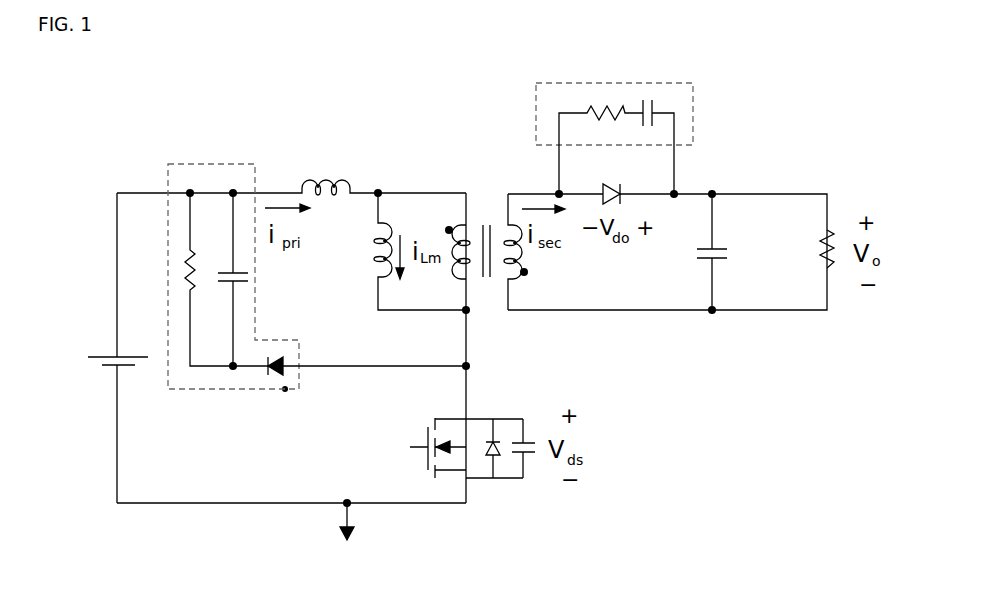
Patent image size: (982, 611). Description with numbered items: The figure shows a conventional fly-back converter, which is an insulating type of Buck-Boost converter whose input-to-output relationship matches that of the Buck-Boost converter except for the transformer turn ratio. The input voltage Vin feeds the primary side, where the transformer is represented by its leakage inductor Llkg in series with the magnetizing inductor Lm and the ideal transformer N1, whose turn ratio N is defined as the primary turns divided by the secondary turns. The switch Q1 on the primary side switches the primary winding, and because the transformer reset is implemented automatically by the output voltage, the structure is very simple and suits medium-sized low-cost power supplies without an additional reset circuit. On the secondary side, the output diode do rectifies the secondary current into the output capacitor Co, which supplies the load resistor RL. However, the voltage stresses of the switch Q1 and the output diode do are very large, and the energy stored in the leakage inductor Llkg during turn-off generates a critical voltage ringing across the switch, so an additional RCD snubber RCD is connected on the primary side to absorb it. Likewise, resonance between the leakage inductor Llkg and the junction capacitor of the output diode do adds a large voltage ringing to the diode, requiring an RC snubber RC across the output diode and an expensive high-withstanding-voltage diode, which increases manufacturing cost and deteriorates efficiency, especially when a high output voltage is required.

The input voltage Vin is at (95, 361).
The RCD snubber circuit RCD is at (311, 295).
The transformer leakage inductor Llkg is at (308, 177).
The magnetizing inductor Lm is at (397, 251).
The transformer turn ratio N:1 N1 is at (487, 226).
The output diode do is at (622, 178).
The RC snubber circuit RC is at (614, 122).
The output capacitor Co is at (696, 252).
The load resistor RL is at (806, 249).
The switch Q1 is at (456, 448).